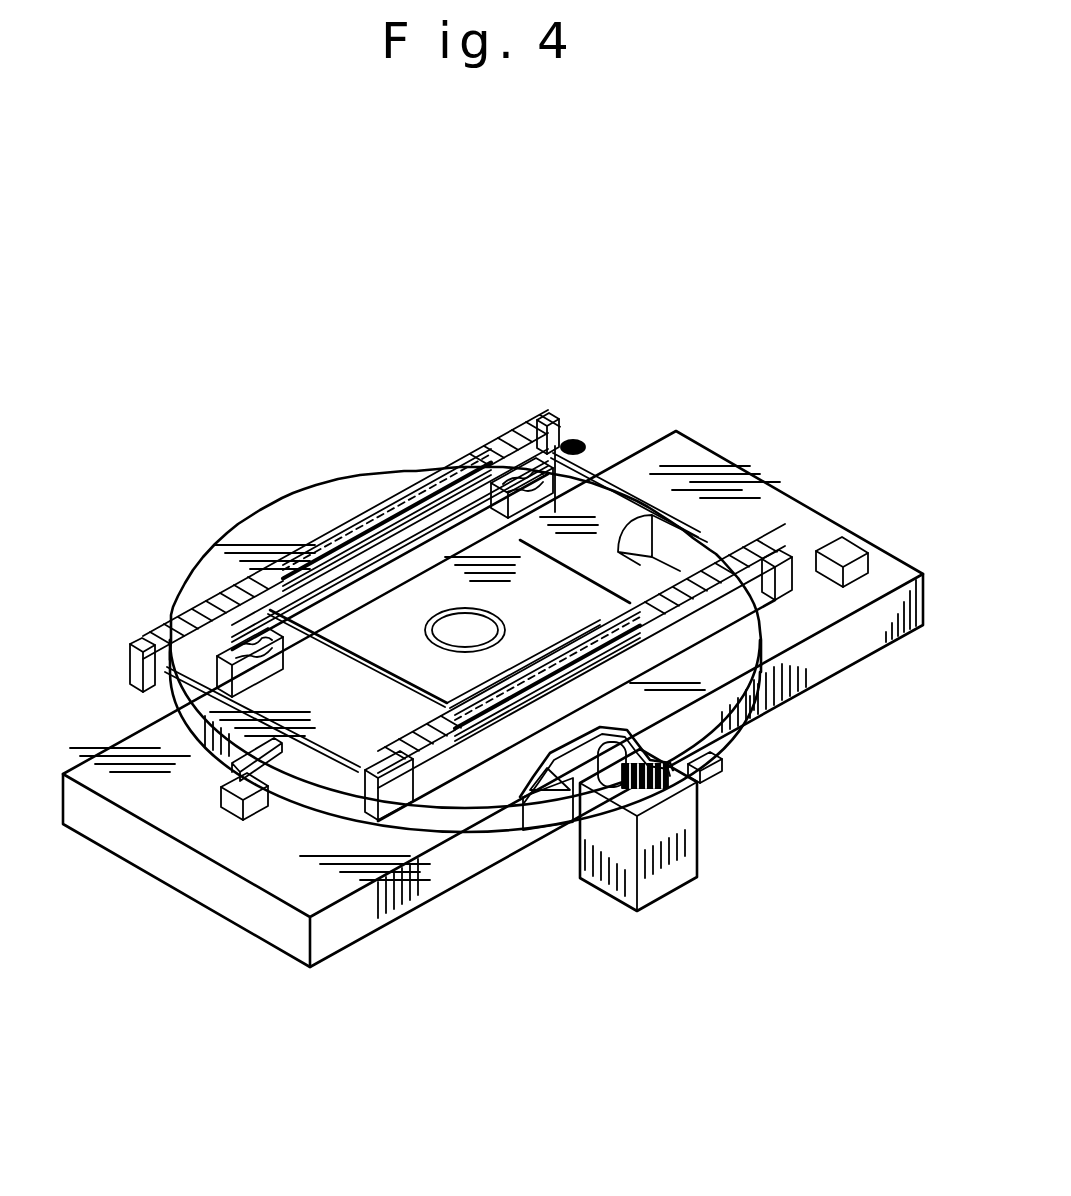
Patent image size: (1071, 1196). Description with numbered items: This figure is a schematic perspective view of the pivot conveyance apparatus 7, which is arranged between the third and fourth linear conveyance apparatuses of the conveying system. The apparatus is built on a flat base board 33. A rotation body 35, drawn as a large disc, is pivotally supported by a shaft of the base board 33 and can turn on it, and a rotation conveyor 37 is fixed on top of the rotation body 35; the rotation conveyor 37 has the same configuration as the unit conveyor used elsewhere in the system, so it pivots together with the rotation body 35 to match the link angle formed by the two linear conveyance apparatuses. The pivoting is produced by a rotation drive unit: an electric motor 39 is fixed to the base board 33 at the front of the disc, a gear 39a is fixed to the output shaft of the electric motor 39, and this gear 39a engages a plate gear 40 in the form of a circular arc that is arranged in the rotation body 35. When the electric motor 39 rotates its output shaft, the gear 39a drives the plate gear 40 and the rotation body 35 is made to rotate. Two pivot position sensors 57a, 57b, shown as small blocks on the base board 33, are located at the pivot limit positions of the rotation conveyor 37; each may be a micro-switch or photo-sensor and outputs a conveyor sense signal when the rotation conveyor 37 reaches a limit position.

The pivot conveyance apparatus 7 is at (461, 587).
The base board 33 is at (843, 648).
The rotation body 35 is at (240, 538).
The rotation conveyor 37 is at (447, 493).
The electric motor 39 is at (620, 887).
The gear 39a is at (653, 790).
The plate gear 40 is at (547, 778).
The pivot position sensor 57a is at (233, 805).
The pivot position sensor 57b is at (843, 552).